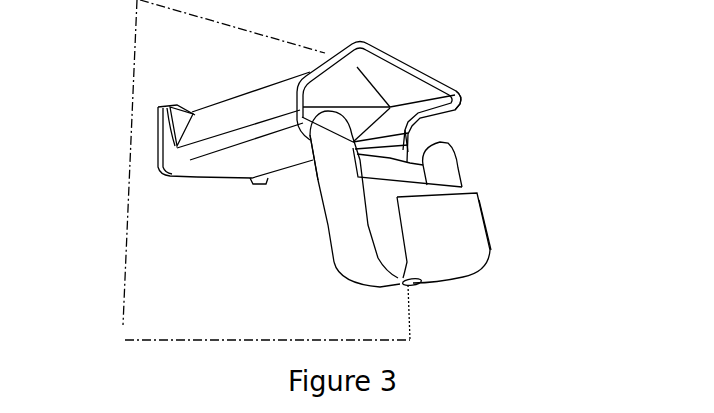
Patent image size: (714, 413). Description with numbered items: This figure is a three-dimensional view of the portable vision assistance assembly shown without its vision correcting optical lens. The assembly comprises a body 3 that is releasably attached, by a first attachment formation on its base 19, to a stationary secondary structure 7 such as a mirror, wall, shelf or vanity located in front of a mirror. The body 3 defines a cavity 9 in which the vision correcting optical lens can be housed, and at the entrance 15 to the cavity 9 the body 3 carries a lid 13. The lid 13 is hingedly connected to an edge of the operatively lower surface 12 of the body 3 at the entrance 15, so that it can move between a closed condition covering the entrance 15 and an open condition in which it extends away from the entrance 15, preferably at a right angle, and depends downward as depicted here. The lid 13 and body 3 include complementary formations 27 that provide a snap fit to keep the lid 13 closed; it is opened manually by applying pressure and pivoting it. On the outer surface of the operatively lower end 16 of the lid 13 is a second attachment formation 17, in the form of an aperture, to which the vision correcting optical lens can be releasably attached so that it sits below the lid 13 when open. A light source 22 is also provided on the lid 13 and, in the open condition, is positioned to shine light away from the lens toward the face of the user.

The body 3 is at (253, 78).
The secondary structure 7 is at (170, 240).
The cavity 9 is at (367, 119).
The operatively lower surface 12 is at (313, 136).
The lid 13 is at (348, 227).
The entrance 15 is at (470, 104).
The operatively lower end 16 is at (398, 283).
The second attachment formation 17 is at (412, 285).
The base 19 is at (177, 148).
The light source 22 is at (463, 240).
The complementary formations 27 is at (417, 67).